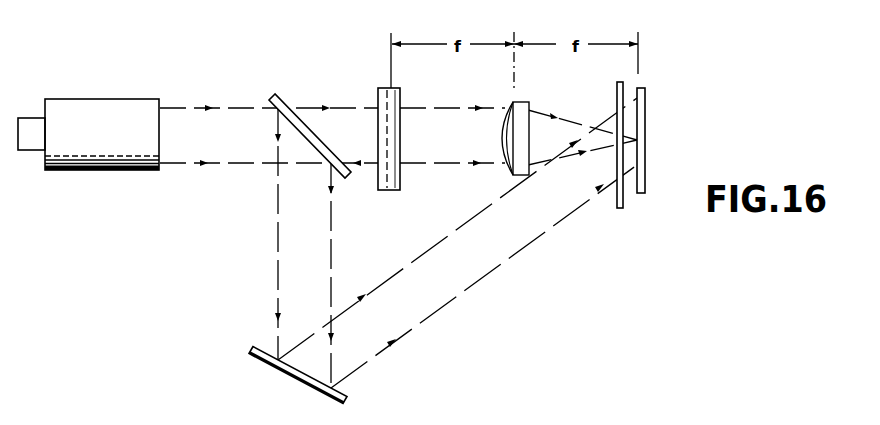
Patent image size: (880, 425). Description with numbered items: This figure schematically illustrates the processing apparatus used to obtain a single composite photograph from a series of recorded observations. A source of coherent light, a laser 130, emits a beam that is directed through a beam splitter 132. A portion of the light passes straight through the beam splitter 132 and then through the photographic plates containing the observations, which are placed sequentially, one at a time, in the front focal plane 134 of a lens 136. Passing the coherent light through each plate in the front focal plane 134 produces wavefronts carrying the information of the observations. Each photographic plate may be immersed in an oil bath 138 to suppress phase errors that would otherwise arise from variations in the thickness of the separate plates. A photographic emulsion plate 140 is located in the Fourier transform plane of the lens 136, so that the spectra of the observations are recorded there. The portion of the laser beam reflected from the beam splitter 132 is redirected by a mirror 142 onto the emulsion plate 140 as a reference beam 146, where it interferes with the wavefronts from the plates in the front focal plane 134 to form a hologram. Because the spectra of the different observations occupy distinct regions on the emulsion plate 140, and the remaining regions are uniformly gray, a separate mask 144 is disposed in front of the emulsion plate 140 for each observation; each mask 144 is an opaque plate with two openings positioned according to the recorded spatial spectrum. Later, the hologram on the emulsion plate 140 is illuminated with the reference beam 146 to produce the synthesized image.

The laser 130 is at (122, 103).
The beam splitter 132 is at (279, 96).
The front focal plane 134 is at (389, 53).
The lens 136 is at (538, 100).
The oil bath 138 is at (385, 94).
The photographic emulsion plate 140 is at (646, 112).
The mirror 142 is at (345, 397).
The mask 144 is at (625, 83).
The reference beam 146 is at (478, 275).